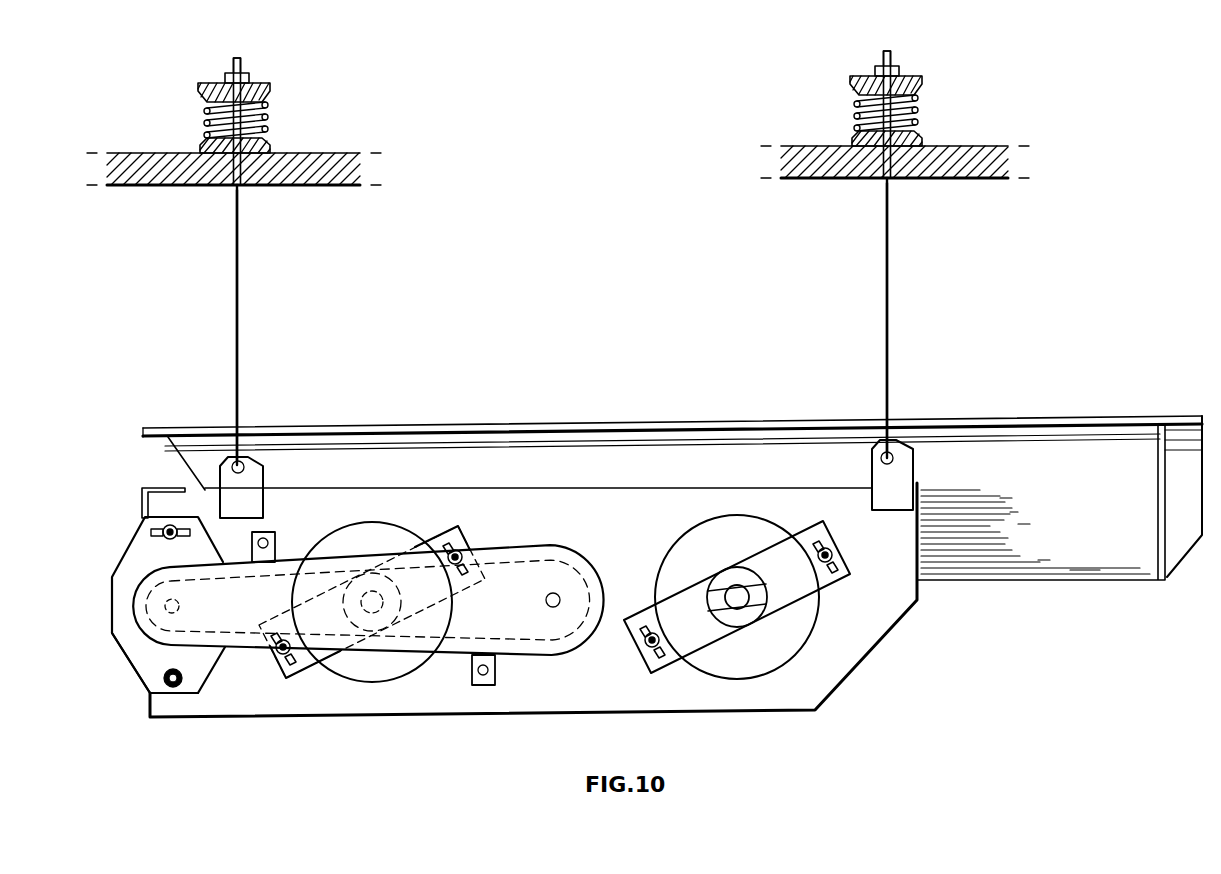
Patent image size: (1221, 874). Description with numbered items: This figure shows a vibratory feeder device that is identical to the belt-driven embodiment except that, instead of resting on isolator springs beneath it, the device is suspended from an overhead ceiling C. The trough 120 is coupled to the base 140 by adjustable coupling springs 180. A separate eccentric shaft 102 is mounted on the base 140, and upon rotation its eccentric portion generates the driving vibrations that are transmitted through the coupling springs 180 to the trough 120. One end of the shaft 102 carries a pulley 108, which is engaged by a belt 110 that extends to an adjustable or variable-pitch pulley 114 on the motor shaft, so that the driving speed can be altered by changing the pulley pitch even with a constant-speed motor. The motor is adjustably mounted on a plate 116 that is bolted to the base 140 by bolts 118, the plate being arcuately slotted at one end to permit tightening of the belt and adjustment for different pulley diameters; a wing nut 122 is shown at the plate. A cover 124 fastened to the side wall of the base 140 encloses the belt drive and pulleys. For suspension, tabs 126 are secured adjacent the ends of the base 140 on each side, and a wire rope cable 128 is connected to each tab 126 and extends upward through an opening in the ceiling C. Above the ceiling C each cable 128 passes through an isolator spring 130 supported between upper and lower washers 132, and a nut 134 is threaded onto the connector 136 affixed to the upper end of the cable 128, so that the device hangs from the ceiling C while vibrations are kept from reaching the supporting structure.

The shaft 102 is at (553, 608).
The pulley 108 is at (568, 567).
The belt 110 is at (460, 633).
The pulley 114 is at (148, 583).
The plate 116 is at (137, 647).
The bolts 118 is at (172, 525).
The trough 120 is at (513, 425).
The wing nut 122 is at (148, 532).
The cover 124 is at (528, 545).
The tabs 126 is at (220, 470).
The wire rope cable 128 is at (237, 309).
The isolator springs 130 is at (265, 110).
The washers 132 is at (200, 146).
The nut 134 is at (247, 76).
The connector 136 is at (234, 58).
The base 140 is at (833, 665).
The adjustable coupling springs 180 is at (427, 520).
The ceiling C is at (168, 178).